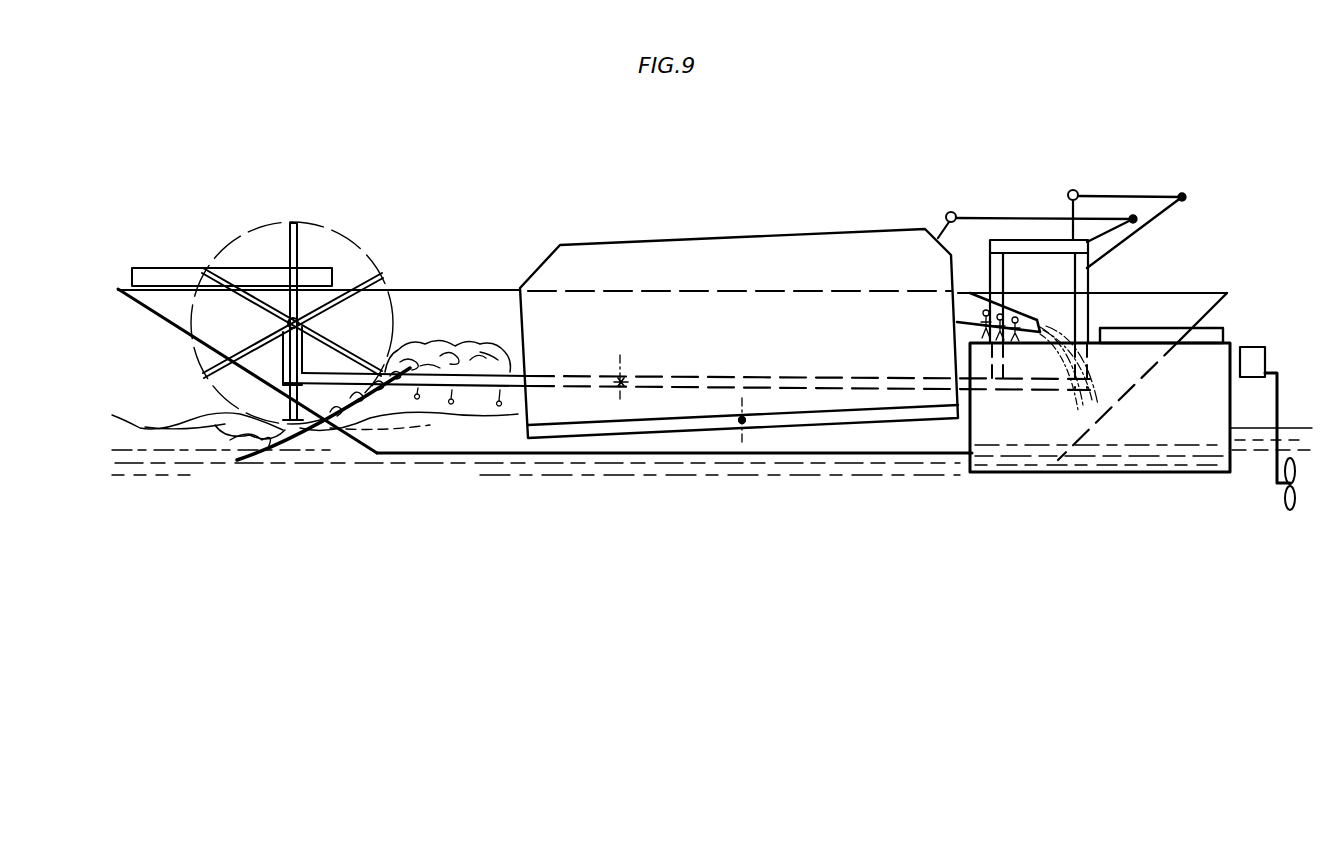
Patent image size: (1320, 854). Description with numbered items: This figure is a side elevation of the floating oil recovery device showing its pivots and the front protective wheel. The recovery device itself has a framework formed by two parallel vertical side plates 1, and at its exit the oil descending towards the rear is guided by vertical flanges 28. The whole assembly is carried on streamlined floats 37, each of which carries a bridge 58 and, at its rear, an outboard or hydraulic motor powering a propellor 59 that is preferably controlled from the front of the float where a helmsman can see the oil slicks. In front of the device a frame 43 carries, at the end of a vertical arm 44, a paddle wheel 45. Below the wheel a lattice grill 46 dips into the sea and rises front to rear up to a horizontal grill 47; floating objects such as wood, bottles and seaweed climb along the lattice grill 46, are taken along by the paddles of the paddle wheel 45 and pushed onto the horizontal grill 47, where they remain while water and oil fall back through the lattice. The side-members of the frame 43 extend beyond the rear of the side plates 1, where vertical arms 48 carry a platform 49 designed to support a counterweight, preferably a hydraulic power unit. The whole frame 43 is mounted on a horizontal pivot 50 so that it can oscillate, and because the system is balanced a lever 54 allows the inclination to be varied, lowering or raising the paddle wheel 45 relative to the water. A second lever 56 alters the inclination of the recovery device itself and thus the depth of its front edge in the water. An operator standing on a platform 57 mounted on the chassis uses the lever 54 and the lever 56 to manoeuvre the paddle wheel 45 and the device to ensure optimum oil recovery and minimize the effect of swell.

The side plates 1 is at (738, 250).
The vertical flanges 28 is at (1030, 318).
The floats 37 is at (443, 302).
The frame 43 is at (470, 386).
The vertical arm 44 is at (300, 347).
The paddle wheel 45 is at (300, 237).
The lattice grill 46 is at (272, 462).
The horizontal grill 47 is at (507, 355).
The vertical arms 48 is at (1080, 276).
The platform 49 is at (1043, 240).
The horizontal pivot 50 is at (622, 382).
The lever 54 is at (742, 422).
The lever 56 is at (998, 218).
The platform 57 is at (1215, 333).
The bridge 58 is at (168, 268).
The propellor 59 is at (1287, 500).